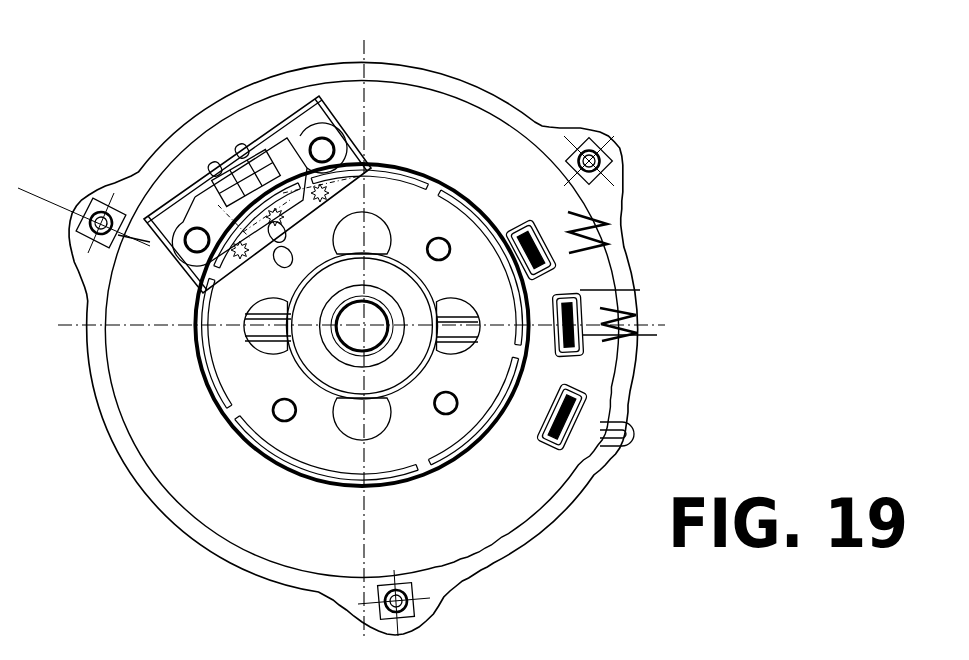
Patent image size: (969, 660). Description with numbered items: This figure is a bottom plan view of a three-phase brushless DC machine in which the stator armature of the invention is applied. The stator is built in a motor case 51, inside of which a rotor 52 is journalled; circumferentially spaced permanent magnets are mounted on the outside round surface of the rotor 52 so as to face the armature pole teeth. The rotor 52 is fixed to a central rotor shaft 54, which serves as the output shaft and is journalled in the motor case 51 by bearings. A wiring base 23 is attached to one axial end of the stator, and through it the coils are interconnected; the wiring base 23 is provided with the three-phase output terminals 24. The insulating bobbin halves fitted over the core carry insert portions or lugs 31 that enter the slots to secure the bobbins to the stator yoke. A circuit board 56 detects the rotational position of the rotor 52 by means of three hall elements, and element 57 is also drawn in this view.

The wiring base 23 is at (512, 503).
The output terminals 24 is at (640, 360).
The insert portions or lugs 31 is at (203, 396).
The motor case 51 is at (488, 96).
The rotor 52 is at (453, 228).
The rotor shaft 54 is at (387, 315).
The circuit board 56 is at (272, 140).
The brushes 57 is at (266, 314).